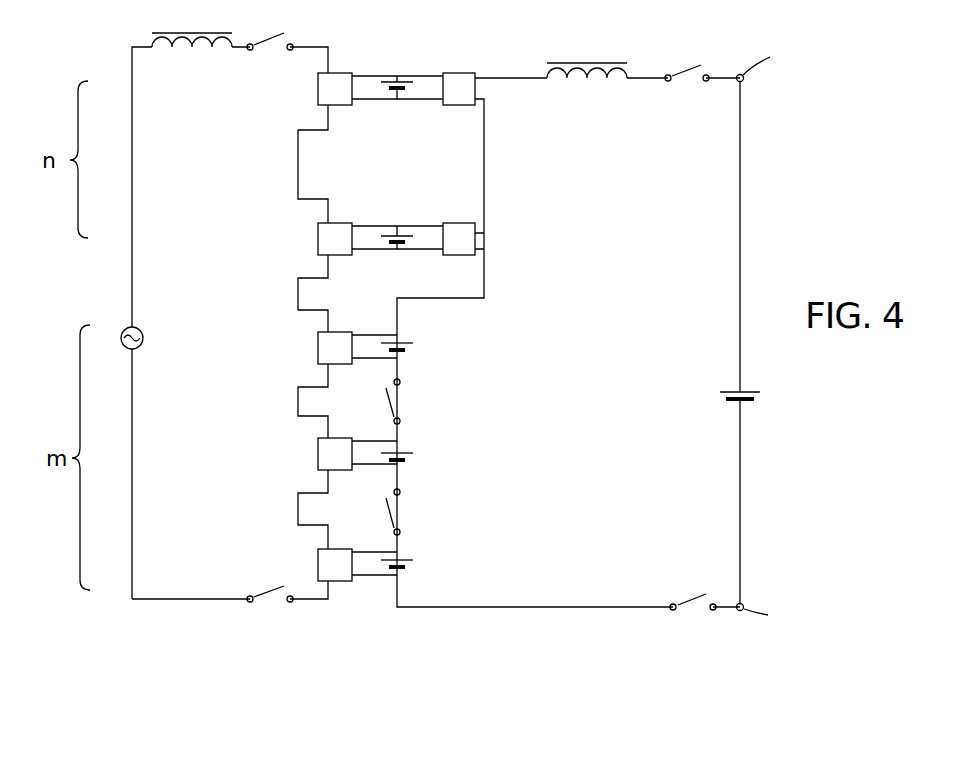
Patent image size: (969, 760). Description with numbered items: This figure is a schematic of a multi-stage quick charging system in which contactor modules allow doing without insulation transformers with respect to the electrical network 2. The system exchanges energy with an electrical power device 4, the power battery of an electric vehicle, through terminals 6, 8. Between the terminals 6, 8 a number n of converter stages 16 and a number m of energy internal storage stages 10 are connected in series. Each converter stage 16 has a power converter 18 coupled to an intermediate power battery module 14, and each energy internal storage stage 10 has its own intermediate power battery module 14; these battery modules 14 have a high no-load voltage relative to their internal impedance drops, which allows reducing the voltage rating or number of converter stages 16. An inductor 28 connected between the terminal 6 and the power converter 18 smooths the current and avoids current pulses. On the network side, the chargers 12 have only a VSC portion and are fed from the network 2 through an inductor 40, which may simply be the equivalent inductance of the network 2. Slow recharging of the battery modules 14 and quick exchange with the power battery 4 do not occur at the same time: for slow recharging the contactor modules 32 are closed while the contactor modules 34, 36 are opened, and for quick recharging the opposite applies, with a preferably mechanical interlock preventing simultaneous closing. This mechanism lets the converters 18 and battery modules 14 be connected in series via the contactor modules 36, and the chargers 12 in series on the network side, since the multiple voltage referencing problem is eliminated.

The electrical network 2 is at (124, 330).
The electrical power device 4 is at (748, 392).
The terminal 6 is at (763, 64).
The terminal 8 is at (761, 617).
The energy internal storage stage 10 is at (294, 553).
The charger 12 is at (335, 327).
The intermediate power battery module 14 is at (402, 94).
The converter stage 16 is at (298, 97).
The power converter 18 is at (459, 164).
The inductor 28 is at (578, 63).
The contactor module 32 is at (263, 37).
The contactor module 34 is at (682, 70).
The contactor module 36 is at (388, 407).
The inductor 40 is at (174, 33).